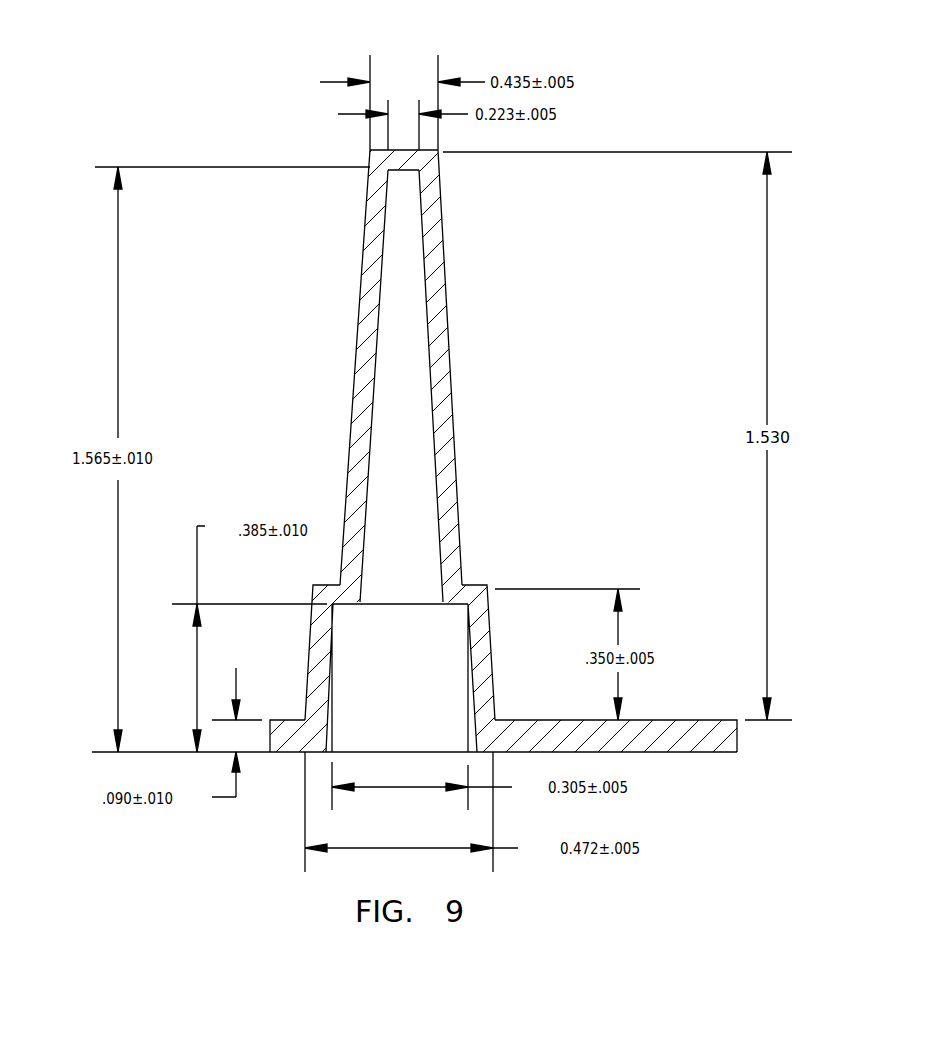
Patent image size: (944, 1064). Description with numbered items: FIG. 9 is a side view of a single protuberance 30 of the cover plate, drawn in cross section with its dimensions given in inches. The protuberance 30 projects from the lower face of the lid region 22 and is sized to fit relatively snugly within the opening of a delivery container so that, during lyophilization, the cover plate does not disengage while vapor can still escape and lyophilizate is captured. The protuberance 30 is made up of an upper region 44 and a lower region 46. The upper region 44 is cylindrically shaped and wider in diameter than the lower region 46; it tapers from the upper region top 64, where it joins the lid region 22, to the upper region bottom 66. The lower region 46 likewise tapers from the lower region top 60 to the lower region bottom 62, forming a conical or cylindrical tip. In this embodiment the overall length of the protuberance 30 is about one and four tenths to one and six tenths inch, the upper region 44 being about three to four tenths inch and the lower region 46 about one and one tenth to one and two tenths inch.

The protuberance 30 is at (696, 78).
The lid region 22 is at (737, 752).
The upper region 44 is at (413, 694).
The lower region 46 is at (401, 150).
The lower region top 60 is at (487, 585).
The lower region bottom 62 is at (438, 151).
The upper region top 64 is at (262, 752).
The upper region bottom 66 is at (313, 585).